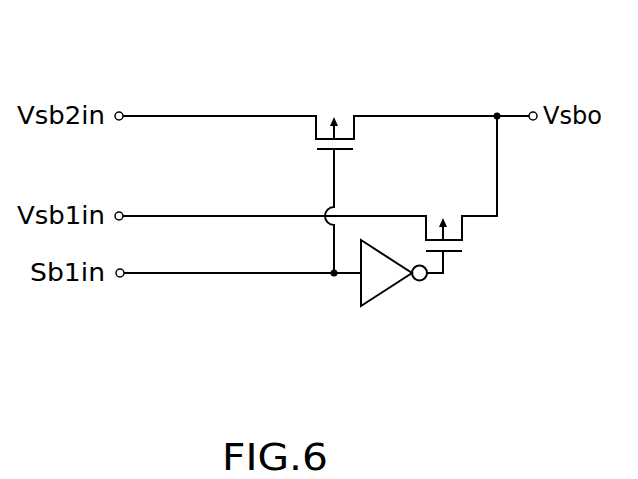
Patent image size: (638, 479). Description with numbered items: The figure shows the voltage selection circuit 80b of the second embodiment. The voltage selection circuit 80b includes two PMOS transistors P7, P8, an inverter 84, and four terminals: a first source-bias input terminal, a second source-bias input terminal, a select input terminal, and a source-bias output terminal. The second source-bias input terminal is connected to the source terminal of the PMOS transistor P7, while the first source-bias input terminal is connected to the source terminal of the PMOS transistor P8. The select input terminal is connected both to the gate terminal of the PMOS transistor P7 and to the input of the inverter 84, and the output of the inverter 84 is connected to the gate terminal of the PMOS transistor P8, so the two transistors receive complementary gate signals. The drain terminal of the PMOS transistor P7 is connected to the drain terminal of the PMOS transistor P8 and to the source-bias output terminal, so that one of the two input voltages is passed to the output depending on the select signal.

The voltage selection circuit 80b is at (448, 54).
The PMOS transistor P7 is at (339, 115).
The PMOS transistor P8 is at (463, 246).
The inverter 84 is at (392, 290).